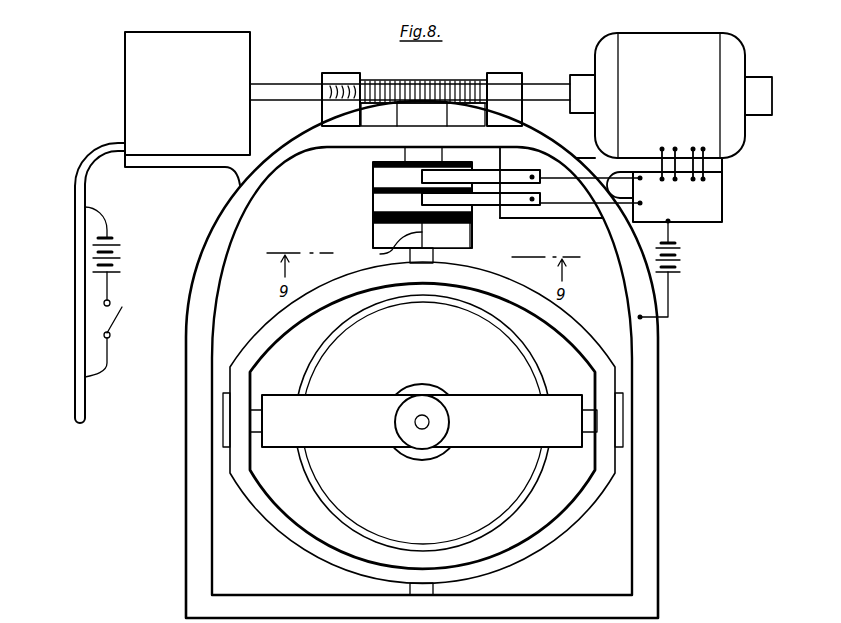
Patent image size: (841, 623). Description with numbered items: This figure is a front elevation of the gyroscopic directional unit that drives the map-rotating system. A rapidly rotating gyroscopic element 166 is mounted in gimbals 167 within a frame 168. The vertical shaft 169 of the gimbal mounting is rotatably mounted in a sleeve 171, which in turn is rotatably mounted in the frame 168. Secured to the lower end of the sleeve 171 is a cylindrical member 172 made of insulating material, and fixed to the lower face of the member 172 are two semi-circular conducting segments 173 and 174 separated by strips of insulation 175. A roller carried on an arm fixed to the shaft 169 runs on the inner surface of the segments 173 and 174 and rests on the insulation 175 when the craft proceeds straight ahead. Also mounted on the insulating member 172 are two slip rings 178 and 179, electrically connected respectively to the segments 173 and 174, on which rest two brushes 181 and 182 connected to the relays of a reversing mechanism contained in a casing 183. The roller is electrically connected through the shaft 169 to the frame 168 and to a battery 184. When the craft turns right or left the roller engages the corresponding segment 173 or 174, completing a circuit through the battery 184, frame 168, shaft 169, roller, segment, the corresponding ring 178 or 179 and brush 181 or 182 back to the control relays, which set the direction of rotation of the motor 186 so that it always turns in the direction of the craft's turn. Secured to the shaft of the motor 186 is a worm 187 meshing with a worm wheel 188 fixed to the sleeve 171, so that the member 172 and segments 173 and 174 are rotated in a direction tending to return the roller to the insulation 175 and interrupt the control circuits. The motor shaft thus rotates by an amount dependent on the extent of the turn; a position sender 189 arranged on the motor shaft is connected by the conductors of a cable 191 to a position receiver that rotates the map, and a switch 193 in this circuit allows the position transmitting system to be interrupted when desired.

The gyroscopic element 166 is at (423, 422).
The gimbals 167 is at (490, 402).
The frame 168 is at (654, 433).
The vertical shaft 169 is at (434, 258).
The sleeve 171 is at (410, 153).
The cylindrical member 172 is at (375, 218).
The semi-circular conducting segment 173 is at (375, 238).
The semi-circular conducting segment 174 is at (462, 236).
The strip of insulation 175 is at (380, 254).
The slip ring 178 is at (375, 180).
The slip ring 179 is at (375, 201).
The brush 181 is at (527, 175).
The brush 182 is at (518, 207).
The casing 183 is at (702, 222).
The battery 184 is at (676, 277).
The motor 186 is at (671, 107).
The worm 187 is at (412, 82).
The worm wheel 188 is at (503, 101).
The position sender 189 is at (223, 108).
The cable 191 is at (87, 157).
The switch 193 is at (118, 331).